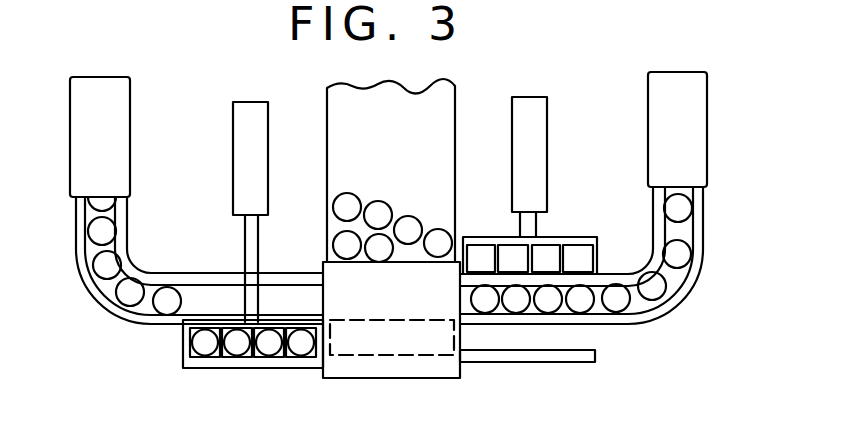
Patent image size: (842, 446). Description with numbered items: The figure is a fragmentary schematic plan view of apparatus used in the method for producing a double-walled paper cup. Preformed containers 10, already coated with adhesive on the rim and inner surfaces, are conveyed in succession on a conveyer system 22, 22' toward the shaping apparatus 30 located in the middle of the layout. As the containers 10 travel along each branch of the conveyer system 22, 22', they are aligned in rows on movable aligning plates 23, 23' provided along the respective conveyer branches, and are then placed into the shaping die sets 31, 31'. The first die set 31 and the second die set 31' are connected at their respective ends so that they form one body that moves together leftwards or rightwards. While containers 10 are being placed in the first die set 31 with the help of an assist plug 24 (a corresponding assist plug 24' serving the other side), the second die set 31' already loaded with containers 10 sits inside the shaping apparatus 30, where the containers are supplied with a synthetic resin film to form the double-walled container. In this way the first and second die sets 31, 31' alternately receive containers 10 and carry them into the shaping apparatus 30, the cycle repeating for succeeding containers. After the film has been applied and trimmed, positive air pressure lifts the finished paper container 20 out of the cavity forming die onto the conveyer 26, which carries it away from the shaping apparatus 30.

The preformed container 10 is at (110, 267).
The paper container 20 is at (346, 205).
The conveyer system 22 is at (182, 200).
The conveyer system 22' is at (604, 198).
The movable aligning plate 23 is at (253, 286).
The movable aligning plate 23' is at (528, 316).
The assist plug 24 is at (270, 212).
The assist plug 24' is at (549, 167).
The conveyer 26 is at (393, 144).
The shaping apparatus 30 is at (348, 392).
The first die set 31 is at (235, 347).
The second die set 31' is at (392, 370).